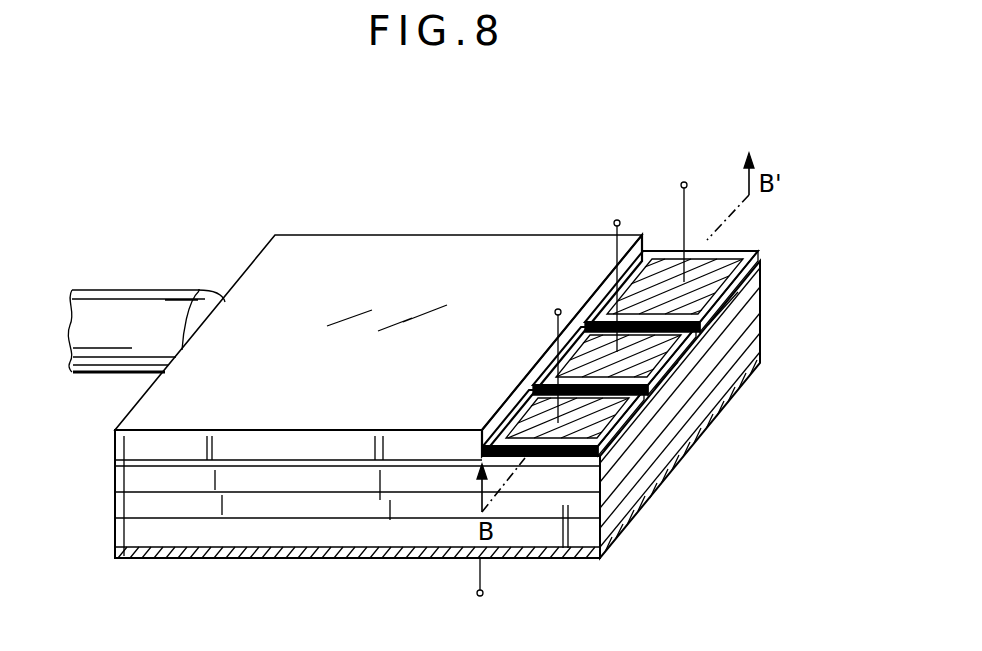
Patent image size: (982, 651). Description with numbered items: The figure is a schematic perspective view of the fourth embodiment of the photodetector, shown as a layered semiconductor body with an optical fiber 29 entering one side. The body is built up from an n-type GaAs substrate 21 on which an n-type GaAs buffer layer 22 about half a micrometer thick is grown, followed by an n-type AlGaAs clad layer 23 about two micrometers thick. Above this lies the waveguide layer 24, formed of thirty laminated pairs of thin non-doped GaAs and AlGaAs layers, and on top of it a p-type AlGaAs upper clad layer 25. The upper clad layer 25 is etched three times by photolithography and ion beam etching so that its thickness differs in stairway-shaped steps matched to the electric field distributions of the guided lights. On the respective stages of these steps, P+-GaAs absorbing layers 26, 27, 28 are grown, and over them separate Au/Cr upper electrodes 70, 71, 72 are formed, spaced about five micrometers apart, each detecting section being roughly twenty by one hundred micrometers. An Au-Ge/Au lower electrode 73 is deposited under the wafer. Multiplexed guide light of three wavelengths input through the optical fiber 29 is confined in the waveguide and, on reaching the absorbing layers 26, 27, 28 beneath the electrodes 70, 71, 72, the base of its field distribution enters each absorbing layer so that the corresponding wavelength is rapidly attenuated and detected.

The n-type GaAs substrate 21 is at (762, 347).
The n-type GaAs buffer layer 22 is at (764, 317).
The n-type AlGaAs clad layer 23 is at (765, 288).
The waveguide layer 24 is at (765, 268).
The upper clad layer 25 is at (765, 248).
The absorbing layer 26 is at (620, 435).
The absorbing layer 27 is at (678, 362).
The absorbing layer 28 is at (738, 292).
The optical fiber 29 is at (133, 300).
The upper electrode 70 is at (527, 425).
The upper electrode 71 is at (592, 358).
The upper electrode 72 is at (656, 262).
The lower electrode 73 is at (762, 363).